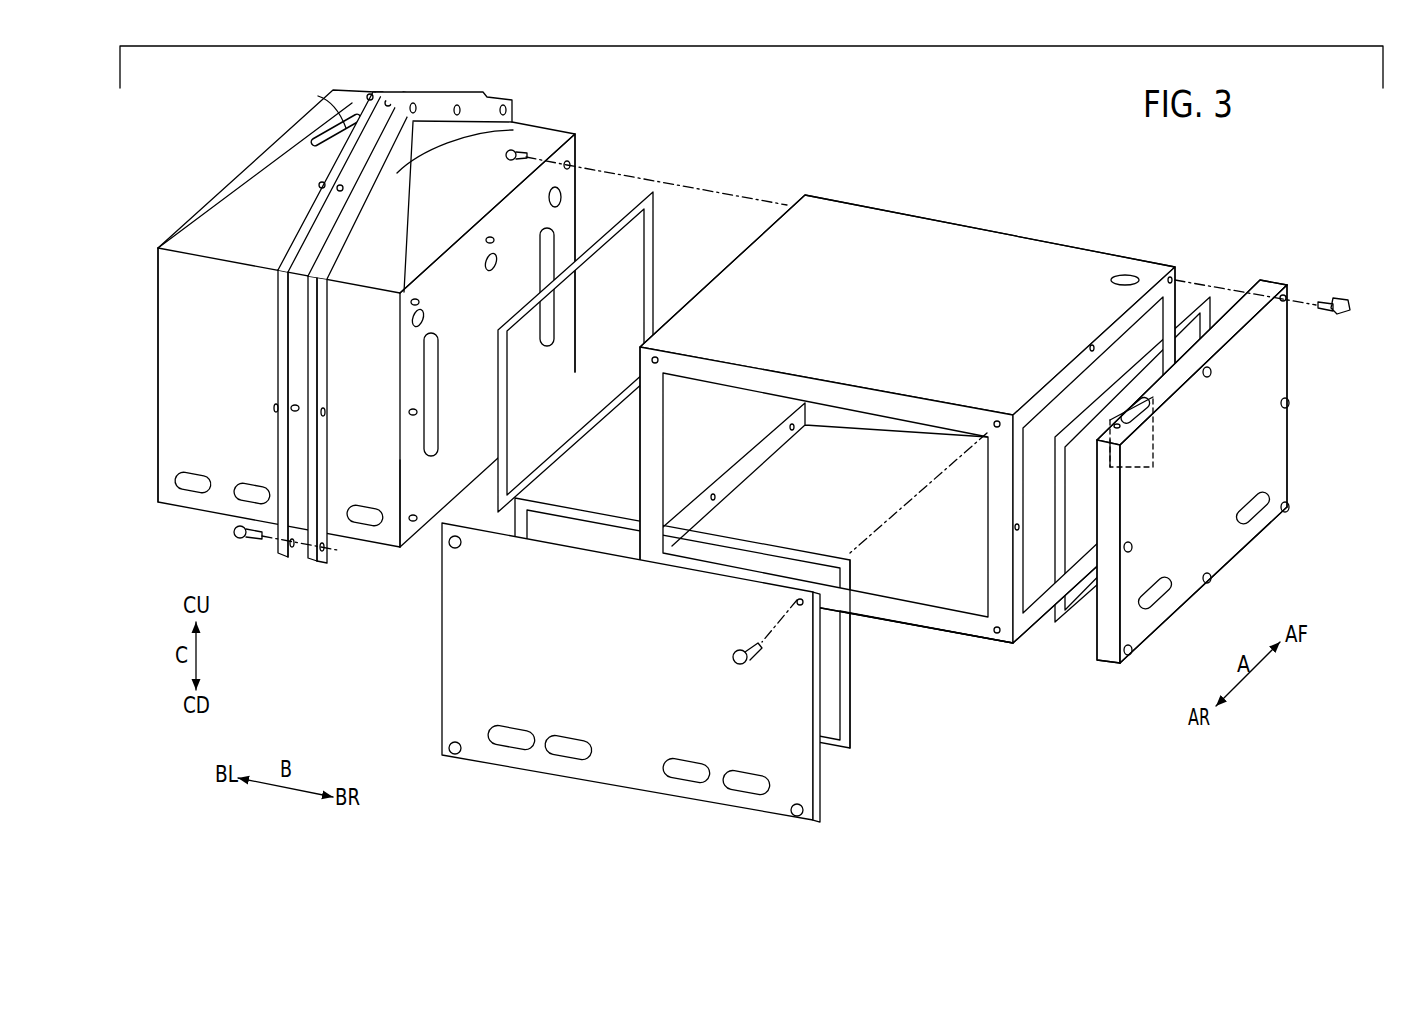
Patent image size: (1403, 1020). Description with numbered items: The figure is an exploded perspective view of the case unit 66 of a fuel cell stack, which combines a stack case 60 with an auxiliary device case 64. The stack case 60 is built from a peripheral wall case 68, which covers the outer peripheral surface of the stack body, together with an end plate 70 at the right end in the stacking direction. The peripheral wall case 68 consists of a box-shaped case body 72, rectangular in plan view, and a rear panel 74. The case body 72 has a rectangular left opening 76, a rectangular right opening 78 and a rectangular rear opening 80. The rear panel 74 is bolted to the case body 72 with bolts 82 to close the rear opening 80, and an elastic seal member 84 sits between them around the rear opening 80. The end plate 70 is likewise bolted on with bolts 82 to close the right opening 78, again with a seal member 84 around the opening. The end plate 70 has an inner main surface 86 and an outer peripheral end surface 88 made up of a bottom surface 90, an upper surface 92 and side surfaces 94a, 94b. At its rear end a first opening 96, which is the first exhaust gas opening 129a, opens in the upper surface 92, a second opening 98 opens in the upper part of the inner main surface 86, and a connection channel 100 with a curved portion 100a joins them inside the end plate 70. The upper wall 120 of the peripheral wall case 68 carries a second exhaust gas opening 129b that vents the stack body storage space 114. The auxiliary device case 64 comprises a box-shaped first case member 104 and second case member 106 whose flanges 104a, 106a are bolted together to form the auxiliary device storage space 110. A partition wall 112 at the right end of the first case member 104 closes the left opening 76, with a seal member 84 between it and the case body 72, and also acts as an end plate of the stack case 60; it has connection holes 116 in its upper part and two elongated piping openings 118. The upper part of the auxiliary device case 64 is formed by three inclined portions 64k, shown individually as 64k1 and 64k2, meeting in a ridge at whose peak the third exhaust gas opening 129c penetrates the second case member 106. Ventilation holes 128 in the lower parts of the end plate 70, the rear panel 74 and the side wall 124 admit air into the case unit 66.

The stack case 60 is at (922, 200).
The auxiliary device case 64 is at (241, 165).
The inclined portion 64k is at (444, 127).
The first hook portion 64k1 is at (513, 130).
The second hook portion 64k2 is at (355, 102).
The case unit 66 is at (800, 128).
The peripheral wall case 68 is at (903, 727).
The end plate 70 is at (1270, 382).
The case body 72 is at (880, 610).
The rear panel 74 is at (803, 785).
The left opening 76 is at (668, 437).
The right opening 78 is at (1023, 490).
The rear opening 80 is at (840, 410).
The bolt 82 is at (508, 157).
The seal member 84 is at (653, 232).
The inner main surface 86 is at (1095, 645).
The outer peripheral end surface 88 is at (1268, 286).
The bottom surface 90 is at (1253, 548).
The upper surface 92 is at (1247, 310).
The side surface 94a is at (1270, 445).
The side surface 94b is at (1110, 508).
The first opening 96 is at (1054, 368).
The second opening 98 is at (1117, 467).
The connection channel 100 is at (1145, 437).
The curved portion 100a is at (1152, 460).
The first case member 104 is at (383, 538).
The flange 104a is at (317, 350).
The second case member 106 is at (208, 502).
The flange 106a is at (297, 331).
The auxiliary device storage space 110 is at (423, 508).
The partition wall 112 is at (572, 306).
The stack body storage space 114 is at (923, 580).
The connection hole 116 is at (562, 197).
The piping opening 118 is at (553, 328).
The upper wall 120 is at (983, 243).
The side wall 124 is at (190, 278).
The ventilation hole 128 is at (193, 474).
The first exhaust gas opening 129a is at (1133, 413).
The second exhaust gas opening 129b is at (1125, 273).
The third exhaust gas opening 129c is at (355, 104).